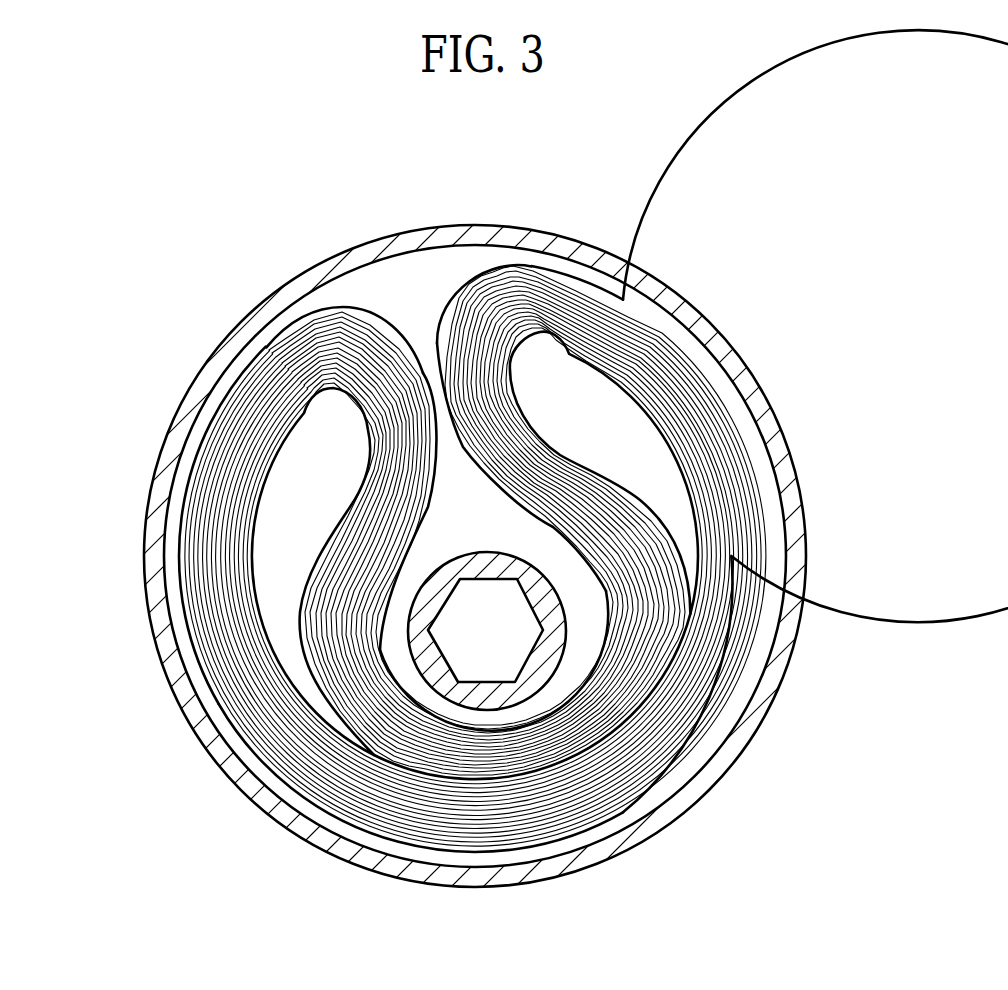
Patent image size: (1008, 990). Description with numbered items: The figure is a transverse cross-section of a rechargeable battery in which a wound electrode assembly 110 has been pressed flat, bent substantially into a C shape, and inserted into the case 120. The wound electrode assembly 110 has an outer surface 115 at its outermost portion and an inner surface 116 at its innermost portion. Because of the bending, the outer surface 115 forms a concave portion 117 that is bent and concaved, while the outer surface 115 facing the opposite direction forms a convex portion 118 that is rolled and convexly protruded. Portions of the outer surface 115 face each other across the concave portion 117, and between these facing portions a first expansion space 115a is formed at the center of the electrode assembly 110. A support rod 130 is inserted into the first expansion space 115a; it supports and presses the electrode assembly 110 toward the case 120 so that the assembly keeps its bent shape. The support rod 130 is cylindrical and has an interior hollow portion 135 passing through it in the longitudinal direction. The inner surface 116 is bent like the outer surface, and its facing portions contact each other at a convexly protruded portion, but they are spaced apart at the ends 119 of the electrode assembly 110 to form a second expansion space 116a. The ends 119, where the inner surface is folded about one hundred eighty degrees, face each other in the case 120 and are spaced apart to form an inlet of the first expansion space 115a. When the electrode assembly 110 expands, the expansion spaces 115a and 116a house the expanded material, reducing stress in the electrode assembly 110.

The electrode assembly 110 is at (690, 312).
The outer surface 115 is at (780, 563).
The first expansion space 115a is at (456, 537).
The inner surface 116 is at (597, 470).
The second expansion space 116a is at (298, 477).
The concave portion 117 is at (600, 577).
The convex portion 118 is at (537, 853).
The ends 119 is at (472, 285).
The case 120 is at (611, 266).
The support rod 130 is at (420, 592).
The hollow portion 135 is at (490, 628).